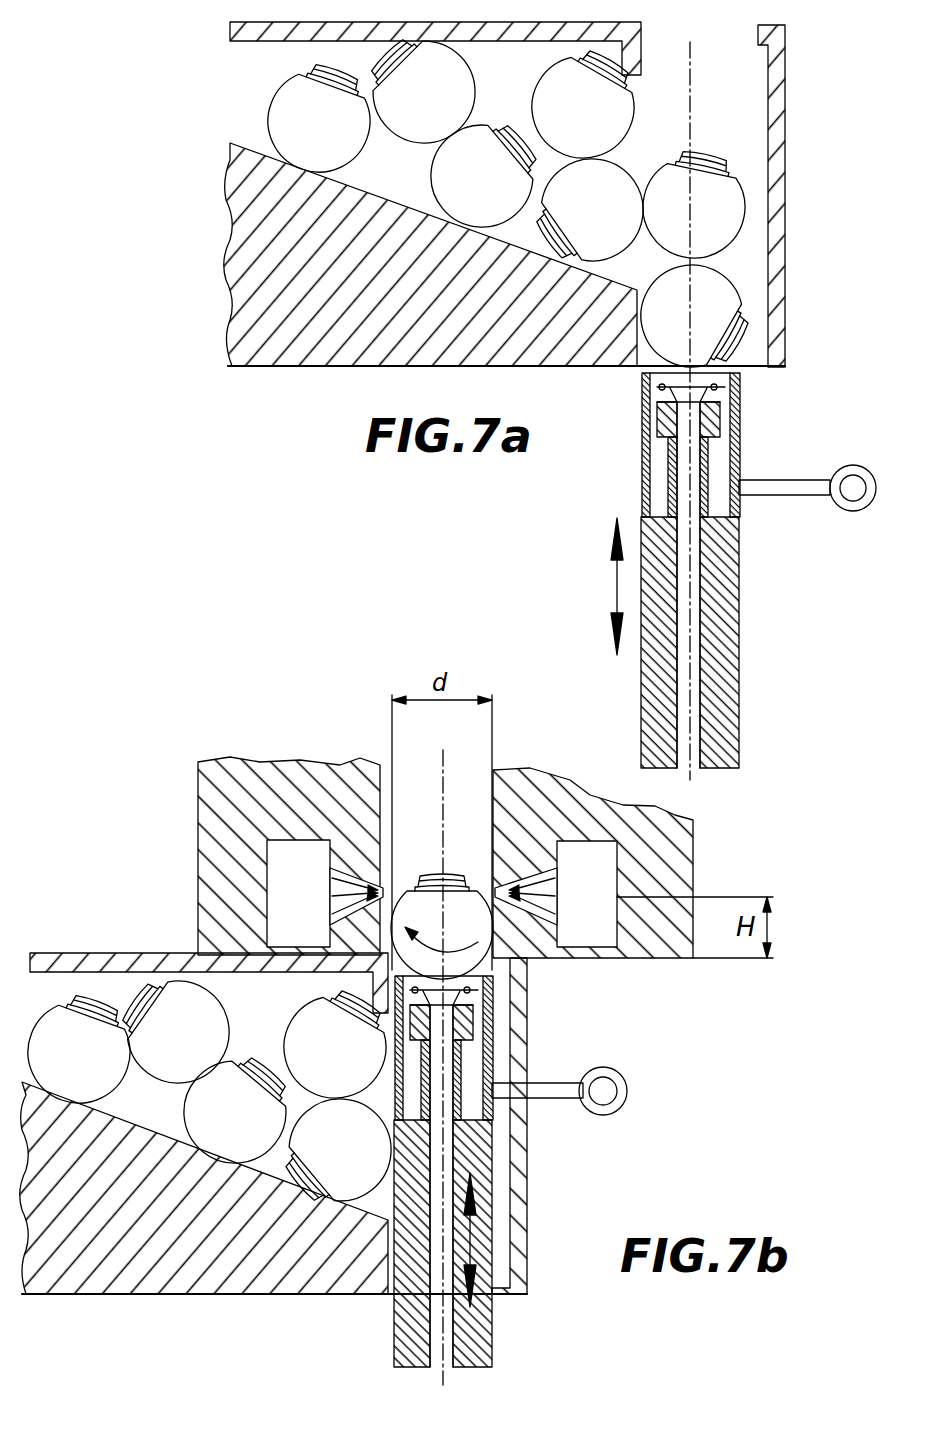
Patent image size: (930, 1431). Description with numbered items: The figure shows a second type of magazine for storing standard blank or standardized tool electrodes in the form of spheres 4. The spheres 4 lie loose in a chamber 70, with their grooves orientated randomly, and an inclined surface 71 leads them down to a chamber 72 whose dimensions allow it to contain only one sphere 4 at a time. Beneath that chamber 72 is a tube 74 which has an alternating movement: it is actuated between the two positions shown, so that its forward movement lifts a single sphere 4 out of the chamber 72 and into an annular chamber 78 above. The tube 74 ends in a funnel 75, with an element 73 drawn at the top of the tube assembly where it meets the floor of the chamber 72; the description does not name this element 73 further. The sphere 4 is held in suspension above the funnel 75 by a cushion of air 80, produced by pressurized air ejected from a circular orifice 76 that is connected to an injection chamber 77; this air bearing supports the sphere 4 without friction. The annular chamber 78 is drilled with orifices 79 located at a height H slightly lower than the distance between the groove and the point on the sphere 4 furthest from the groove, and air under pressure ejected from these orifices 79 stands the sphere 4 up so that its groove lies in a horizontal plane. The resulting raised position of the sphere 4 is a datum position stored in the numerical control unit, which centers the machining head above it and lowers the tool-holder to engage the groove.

In FIG. 7A, the chamber 70 is at (528, 96).
In FIG. 7A, the inclined surface 71 is at (404, 190).
In FIG. 7A, the chamber 72 is at (748, 344).
In FIG. 7A, the top plate of lifting cylinder 73 is at (644, 402).
In FIG. 7A, the tube 74 is at (739, 642).
In FIG. 7B, the tube 74 is at (496, 1243).
In FIG. 7A, the funnel 75 is at (751, 400).
In FIG. 7A, the circular orifice 76 is at (664, 445).
In FIG. 7A, the injection chamber 77 is at (635, 477).
In FIG. 7B, the annular chamber 78 is at (470, 798).
In FIG. 7B, the orifices 79 is at (365, 766).
In FIG. 7B, the cushion of air 80 is at (495, 1048).
In FIG. 7B, the sphere 4 is at (436, 880).